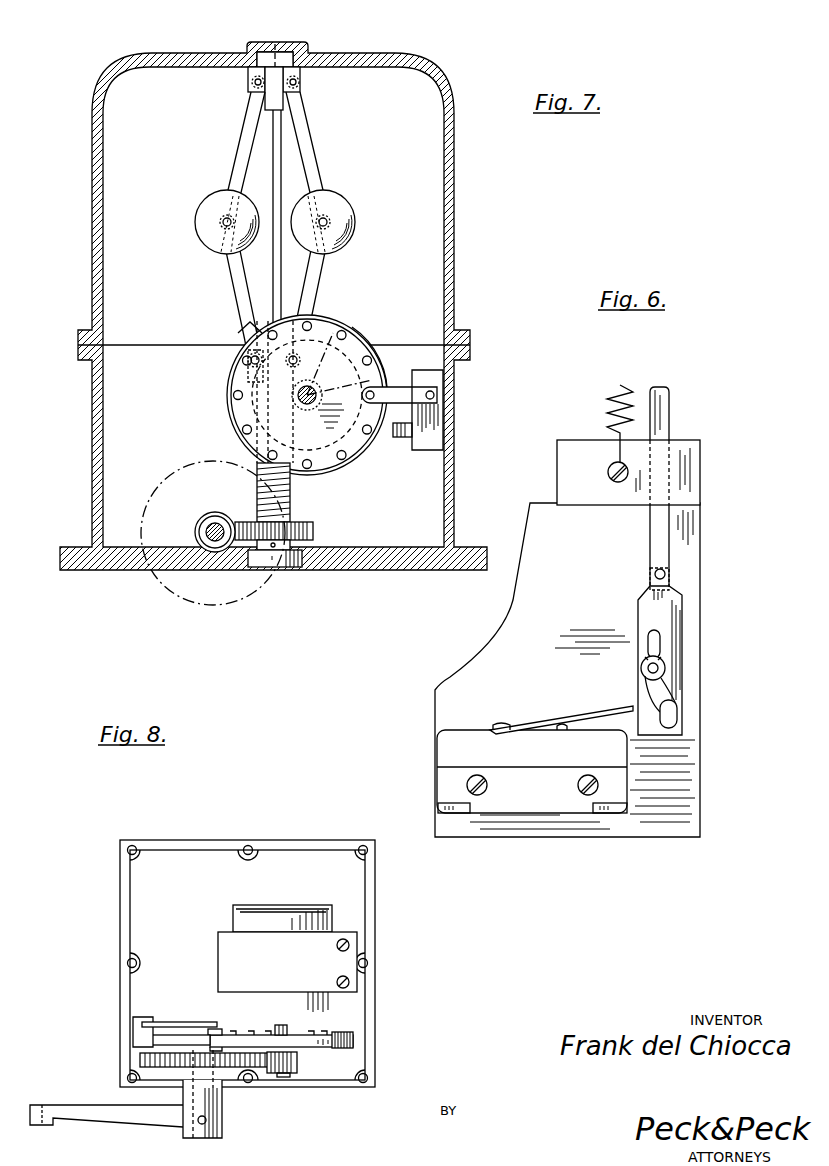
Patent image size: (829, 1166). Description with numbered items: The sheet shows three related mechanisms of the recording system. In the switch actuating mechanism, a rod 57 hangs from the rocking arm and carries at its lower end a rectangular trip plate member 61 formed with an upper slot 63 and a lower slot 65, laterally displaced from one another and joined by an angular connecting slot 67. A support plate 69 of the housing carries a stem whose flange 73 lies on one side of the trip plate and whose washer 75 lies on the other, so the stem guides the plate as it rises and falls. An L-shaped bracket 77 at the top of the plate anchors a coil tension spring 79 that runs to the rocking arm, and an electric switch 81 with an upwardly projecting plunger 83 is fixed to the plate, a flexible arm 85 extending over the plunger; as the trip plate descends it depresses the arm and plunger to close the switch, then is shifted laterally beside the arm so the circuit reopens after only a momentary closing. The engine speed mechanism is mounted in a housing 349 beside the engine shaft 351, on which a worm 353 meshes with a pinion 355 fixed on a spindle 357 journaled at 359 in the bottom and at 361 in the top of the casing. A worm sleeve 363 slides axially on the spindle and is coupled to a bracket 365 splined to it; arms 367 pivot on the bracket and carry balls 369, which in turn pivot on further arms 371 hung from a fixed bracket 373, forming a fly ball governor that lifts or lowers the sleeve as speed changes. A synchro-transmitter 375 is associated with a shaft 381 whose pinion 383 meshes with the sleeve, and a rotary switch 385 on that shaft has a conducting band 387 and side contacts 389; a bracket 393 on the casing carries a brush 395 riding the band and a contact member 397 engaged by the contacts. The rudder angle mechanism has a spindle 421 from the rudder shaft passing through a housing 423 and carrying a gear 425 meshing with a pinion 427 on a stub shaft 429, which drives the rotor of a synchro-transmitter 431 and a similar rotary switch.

In FIG. 7, the housing 349 is at (455, 509).
In FIG. 7, the engine shaft 351 is at (205, 535).
In FIG. 7, the worm 353 is at (215, 513).
In FIG. 7, the pinion 355 is at (314, 530).
In FIG. 7, the spindle 357 is at (282, 173).
In FIG. 7, the journal 359 is at (294, 567).
In FIG. 7, the journal 361 is at (290, 53).
In FIG. 7, the worm sleeve 363 is at (300, 372).
In FIG. 7, the bracket 365 is at (331, 317).
In FIG. 7, the arms 367 is at (310, 293).
In FIG. 7, the ball 369 is at (340, 205).
In FIG. 7, the arms 371 is at (303, 127).
In FIG. 7, the fixed bracket 373 is at (300, 73).
In FIG. 7, the synchro-transmitter 375 is at (236, 406).
In FIG. 7, the shaft 381 is at (313, 386).
In FIG. 7, the pinion 383 is at (380, 368).
In FIG. 7, the rotary switch 385 is at (229, 348).
In FIG. 8, the rotary switch 385 is at (356, 1053).
In FIG. 7, the conducting band 387 is at (362, 455).
In FIG. 8, the conducting band 387 is at (354, 1043).
In FIG. 7, the contacts 389 is at (233, 390).
In FIG. 8, the contacts 389 is at (228, 1030).
In FIG. 7, the bracket 393 is at (442, 435).
In FIG. 8, the bracket 393 is at (137, 1025).
In FIG. 7, the brush 395 is at (384, 354).
In FIG. 8, the brush 395 is at (153, 1040).
In FIG. 7, the contact member 397 is at (428, 389).
In FIG. 8, the contact member 397 is at (168, 1022).
In FIG. 6, the rod 57 is at (668, 410).
In FIG. 6, the trip plate member 61 is at (678, 600).
In FIG. 6, the upper slot 63 is at (658, 638).
In FIG. 6, the lower slot 65 is at (671, 716).
In FIG. 6, the connecting slot 67 is at (668, 681).
In FIG. 6, the support plate 69 is at (690, 786).
In FIG. 6, the flange 73 is at (661, 666).
In FIG. 6, the washer 75 is at (641, 666).
In FIG. 6, the L-shaped bracket 77 is at (567, 445).
In FIG. 6, the coil tension spring 79 is at (623, 385).
In FIG. 6, the electric switch 81 is at (442, 755).
In FIG. 6, the plunger 83 is at (558, 728).
In FIG. 6, the flexible arm 85 is at (577, 713).
In FIG. 8, the spindle 421 is at (223, 1107).
In FIG. 8, the housing 423 is at (374, 1028).
In FIG. 8, the gear 425 is at (140, 1060).
In FIG. 8, the pinion 427 is at (297, 1064).
In FIG. 8, the stub shaft 429 is at (283, 1026).
In FIG. 8, the synchro-transmitter 431 is at (345, 915).